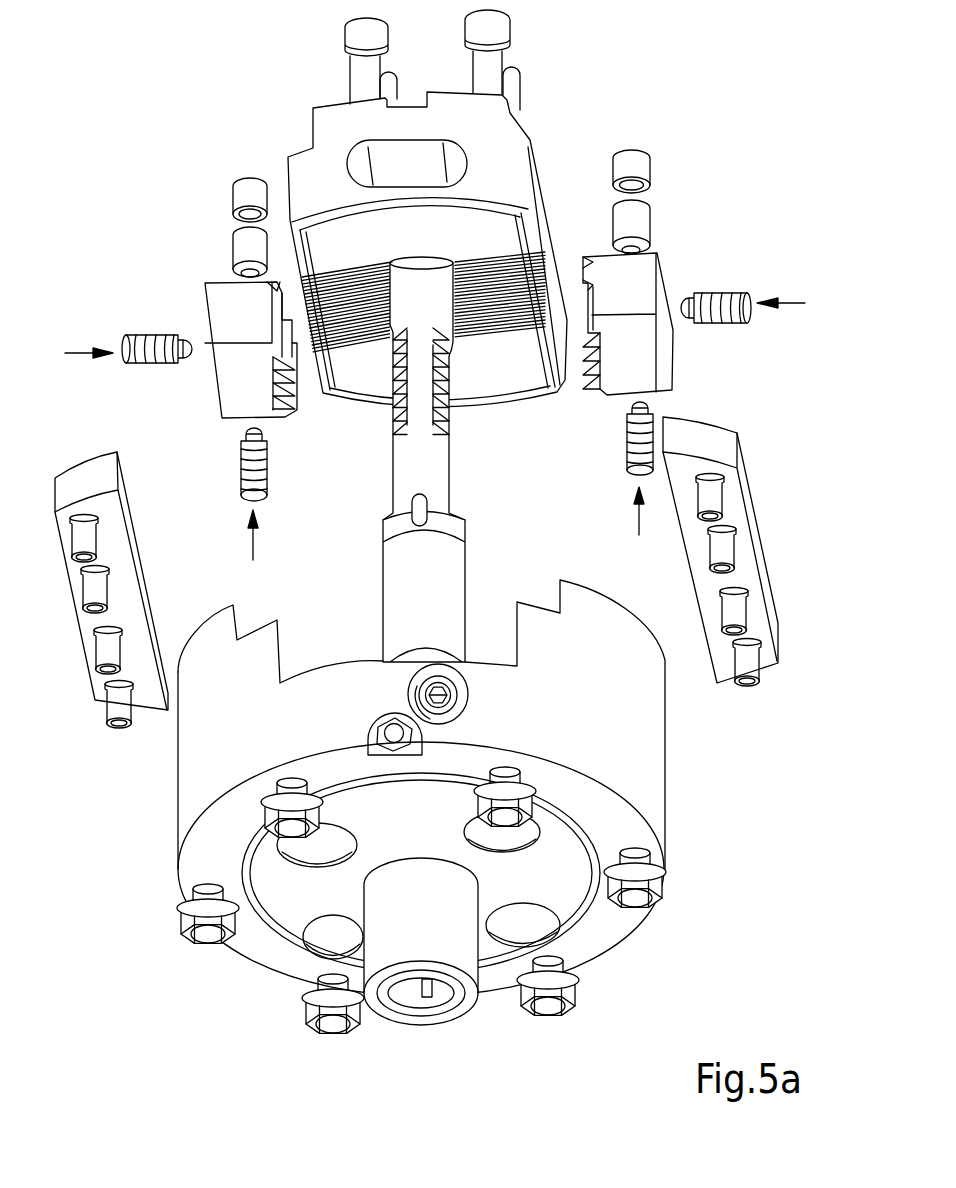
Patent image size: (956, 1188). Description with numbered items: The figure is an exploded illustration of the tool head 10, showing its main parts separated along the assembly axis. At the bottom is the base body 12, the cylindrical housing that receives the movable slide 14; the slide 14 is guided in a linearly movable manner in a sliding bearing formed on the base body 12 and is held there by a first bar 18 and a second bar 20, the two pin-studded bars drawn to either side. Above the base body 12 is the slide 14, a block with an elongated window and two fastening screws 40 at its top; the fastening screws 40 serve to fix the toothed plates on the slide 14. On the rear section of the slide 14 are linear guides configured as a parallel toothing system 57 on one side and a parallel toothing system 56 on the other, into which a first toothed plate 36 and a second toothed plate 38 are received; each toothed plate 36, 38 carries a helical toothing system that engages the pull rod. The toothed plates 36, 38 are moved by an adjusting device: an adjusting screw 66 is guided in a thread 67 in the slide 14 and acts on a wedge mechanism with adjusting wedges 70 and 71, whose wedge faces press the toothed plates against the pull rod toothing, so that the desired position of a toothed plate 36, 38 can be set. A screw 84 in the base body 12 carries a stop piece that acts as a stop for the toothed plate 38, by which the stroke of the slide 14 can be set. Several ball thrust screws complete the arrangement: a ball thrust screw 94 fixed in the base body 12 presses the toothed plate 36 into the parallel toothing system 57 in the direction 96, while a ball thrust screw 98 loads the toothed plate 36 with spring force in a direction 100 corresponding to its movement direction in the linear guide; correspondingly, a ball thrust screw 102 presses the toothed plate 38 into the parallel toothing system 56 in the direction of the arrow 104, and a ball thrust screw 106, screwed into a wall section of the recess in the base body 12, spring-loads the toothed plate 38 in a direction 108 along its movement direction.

The tool head 10 is at (431, 569).
The base body 12 is at (653, 747).
The slide 14 is at (443, 105).
The first bar 18 is at (110, 467).
The second bar 20 is at (730, 443).
The first toothed plate 36 is at (237, 410).
The second toothed plate 38 is at (670, 340).
The fastening screws 40 is at (347, 36).
The parallel toothing system 56 is at (513, 332).
The parallel toothing system 57 is at (360, 340).
The adjusting screw 66 is at (638, 167).
The thread 67 is at (240, 192).
The adjusting wedge 70 is at (642, 228).
The adjusting wedge 71 is at (240, 255).
The screw 84 is at (468, 694).
The ball thrust screw 94 is at (267, 455).
The direction 96 is at (253, 542).
The ball thrust screw 98 is at (150, 335).
The direction 100 is at (85, 353).
The ball thrust screw 102 is at (627, 440).
The arrow 104 is at (639, 515).
The ball thrust screw 106 is at (723, 293).
The direction 108 is at (787, 302).